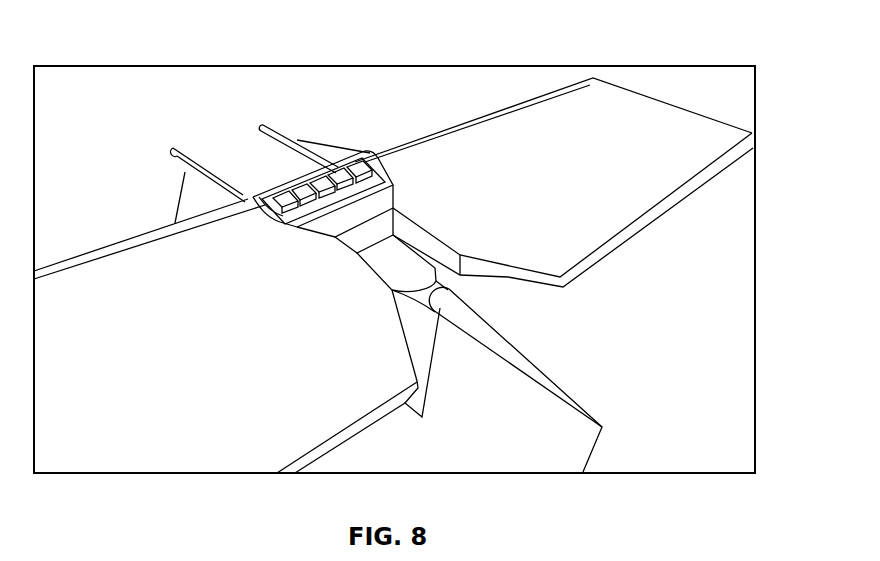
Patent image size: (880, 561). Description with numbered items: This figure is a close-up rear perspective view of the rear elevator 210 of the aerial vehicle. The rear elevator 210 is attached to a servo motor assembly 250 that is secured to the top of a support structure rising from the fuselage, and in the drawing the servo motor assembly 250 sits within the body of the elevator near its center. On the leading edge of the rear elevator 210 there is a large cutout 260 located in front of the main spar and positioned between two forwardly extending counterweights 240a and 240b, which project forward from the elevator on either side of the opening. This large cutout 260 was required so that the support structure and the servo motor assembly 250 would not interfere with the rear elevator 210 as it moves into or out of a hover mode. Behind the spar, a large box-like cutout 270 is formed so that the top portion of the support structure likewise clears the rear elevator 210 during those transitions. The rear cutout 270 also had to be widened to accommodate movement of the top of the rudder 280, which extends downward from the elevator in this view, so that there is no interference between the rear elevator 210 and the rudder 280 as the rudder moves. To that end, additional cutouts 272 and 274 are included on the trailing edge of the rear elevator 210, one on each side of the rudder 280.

The rear elevator 210 is at (170, 430).
The forwardly extending counterweight 240a is at (285, 138).
The forwardly extending counterweight 240b is at (173, 157).
The servo motor assembly 250 is at (322, 193).
The large cutout 260 is at (290, 178).
The large box-like cutout 270 is at (493, 298).
The additional cutout 272 is at (508, 277).
The additional cutout 274 is at (412, 357).
The rudder 280 is at (573, 457).